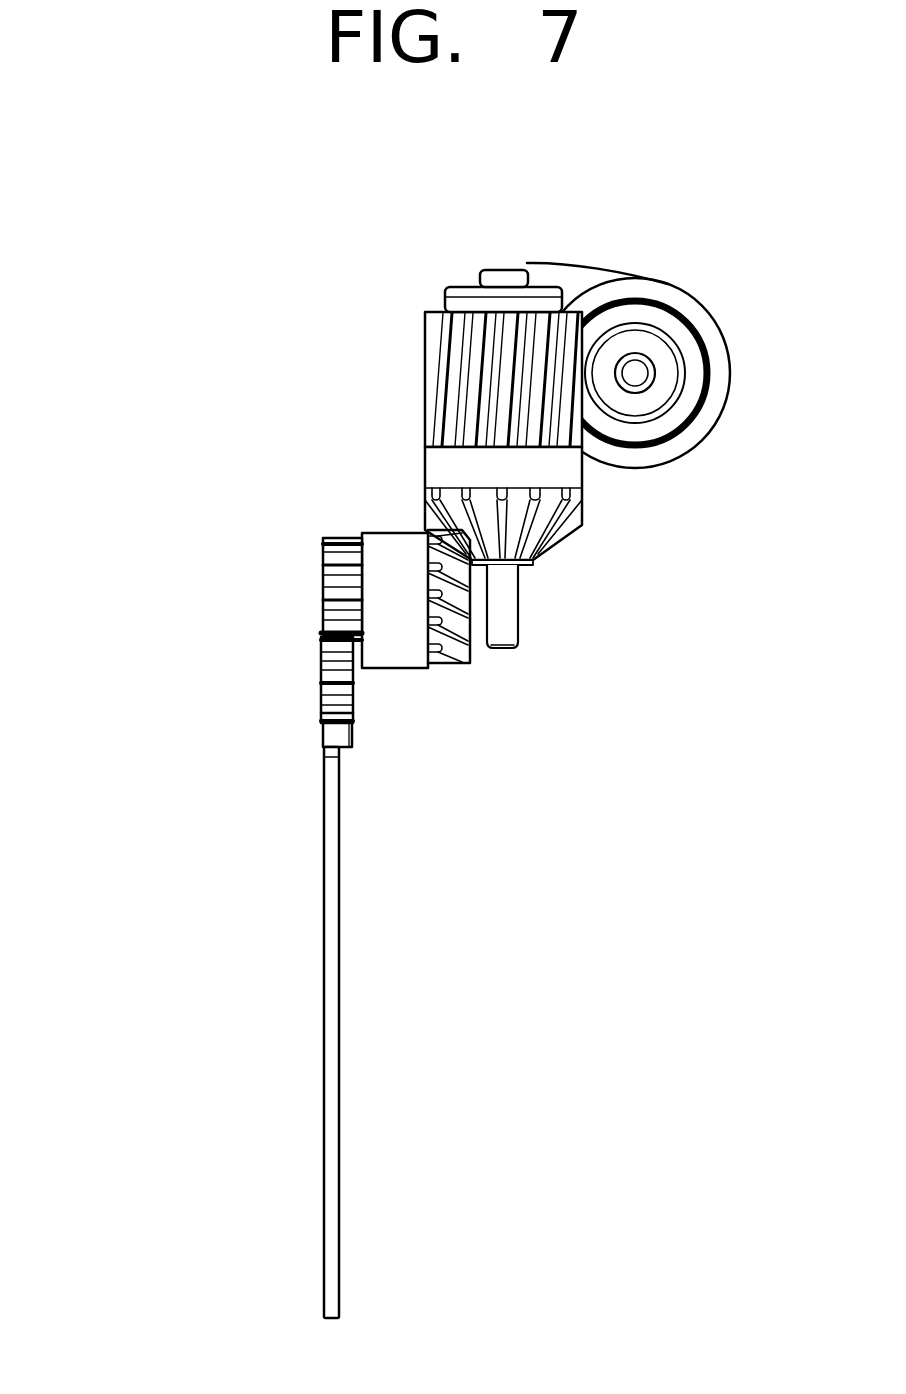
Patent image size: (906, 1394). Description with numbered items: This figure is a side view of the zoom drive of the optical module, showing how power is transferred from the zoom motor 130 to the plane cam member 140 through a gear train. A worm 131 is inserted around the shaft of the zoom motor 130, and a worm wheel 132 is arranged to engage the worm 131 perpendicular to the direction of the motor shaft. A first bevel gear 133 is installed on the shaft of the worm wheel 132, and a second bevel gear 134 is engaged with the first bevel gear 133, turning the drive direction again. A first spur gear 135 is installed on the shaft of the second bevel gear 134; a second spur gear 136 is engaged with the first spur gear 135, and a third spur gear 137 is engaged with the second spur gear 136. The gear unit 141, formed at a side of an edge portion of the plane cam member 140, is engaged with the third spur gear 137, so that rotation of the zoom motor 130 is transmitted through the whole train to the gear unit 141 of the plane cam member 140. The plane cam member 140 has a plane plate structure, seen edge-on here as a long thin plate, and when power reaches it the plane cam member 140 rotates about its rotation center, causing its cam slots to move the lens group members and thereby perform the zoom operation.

The zoom motor 130 is at (697, 317).
The worm 131 is at (636, 343).
The worm wheel 132 is at (438, 372).
The first bevel gear 133 is at (455, 495).
The second bevel gear 134 is at (443, 655).
The first spur gear 135 is at (337, 552).
The second spur gear 136 is at (335, 690).
The third spur gear 137 is at (332, 734).
The plane cam member 140 is at (300, 1105).
The gear unit 141 is at (318, 755).